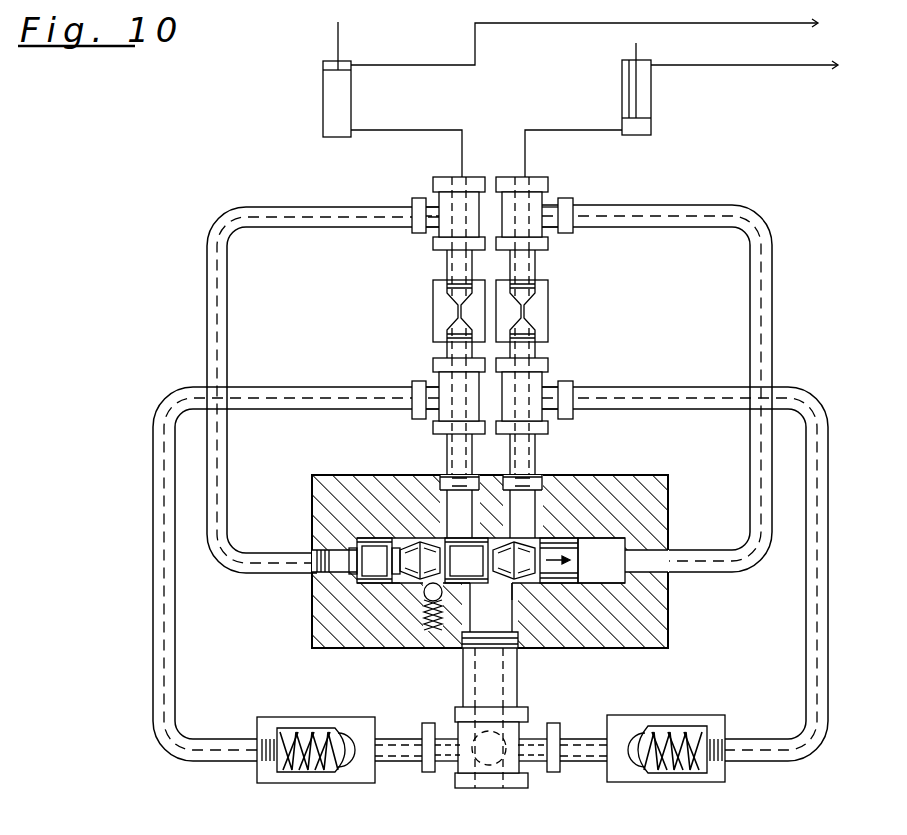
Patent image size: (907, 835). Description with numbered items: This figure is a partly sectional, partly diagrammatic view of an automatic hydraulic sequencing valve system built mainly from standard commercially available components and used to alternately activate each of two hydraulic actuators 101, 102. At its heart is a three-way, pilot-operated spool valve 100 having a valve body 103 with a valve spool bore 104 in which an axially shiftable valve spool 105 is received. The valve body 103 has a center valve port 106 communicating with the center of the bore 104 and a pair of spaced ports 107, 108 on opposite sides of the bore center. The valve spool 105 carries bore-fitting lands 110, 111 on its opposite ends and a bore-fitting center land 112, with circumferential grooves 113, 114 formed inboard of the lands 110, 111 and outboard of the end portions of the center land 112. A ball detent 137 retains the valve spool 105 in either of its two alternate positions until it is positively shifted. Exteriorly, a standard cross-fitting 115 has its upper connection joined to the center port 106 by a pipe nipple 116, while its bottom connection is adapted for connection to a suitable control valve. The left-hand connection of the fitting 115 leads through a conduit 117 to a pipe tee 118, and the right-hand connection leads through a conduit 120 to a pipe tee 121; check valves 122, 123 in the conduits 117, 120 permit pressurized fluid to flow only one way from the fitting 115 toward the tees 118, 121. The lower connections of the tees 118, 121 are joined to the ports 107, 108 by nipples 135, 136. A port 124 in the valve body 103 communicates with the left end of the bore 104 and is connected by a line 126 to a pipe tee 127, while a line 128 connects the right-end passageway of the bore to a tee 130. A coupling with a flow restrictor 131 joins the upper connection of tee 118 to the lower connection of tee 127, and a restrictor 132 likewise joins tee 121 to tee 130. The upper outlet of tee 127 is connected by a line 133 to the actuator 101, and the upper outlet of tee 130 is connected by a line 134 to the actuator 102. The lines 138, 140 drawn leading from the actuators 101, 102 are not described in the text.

The spool valve 100 is at (492, 551).
The hydraulic actuator 101 is at (320, 100).
The hydraulic actuator 102 is at (620, 100).
The valve body 103 is at (668, 500).
The valve spool bore 104 is at (407, 538).
The valve spool 105 is at (357, 558).
The center valve port 106 is at (474, 612).
The port 107 is at (421, 540).
The port 108 is at (530, 512).
The land 110 is at (375, 560).
The land 111 is at (582, 554).
The center land 112 is at (466, 560).
The circumferential groove 113 is at (400, 585).
The circumferential groove 114 is at (530, 580).
The cross-fitting 115 is at (455, 770).
The pipe nipple 116 is at (468, 680).
The conduit 117 is at (153, 562).
The pipe tee 118 is at (440, 384).
The conduit 120 is at (829, 540).
The pipe tee 121 is at (548, 383).
The check valve 122 is at (334, 716).
The check valve 123 is at (690, 706).
The port 124 is at (330, 568).
The line 126 is at (212, 322).
The pipe tee 127 is at (440, 203).
The line 128 is at (765, 345).
The tee 130 is at (548, 204).
The flow restrictor 131 is at (437, 300).
The restrictor 132 is at (541, 306).
The line 133 is at (392, 130).
The line 134 is at (553, 130).
The nipple 135 is at (458, 490).
The nipple 136 is at (537, 462).
The ball detent 137 is at (427, 595).
The output line 138 is at (592, 32).
The output line 140 is at (700, 65).